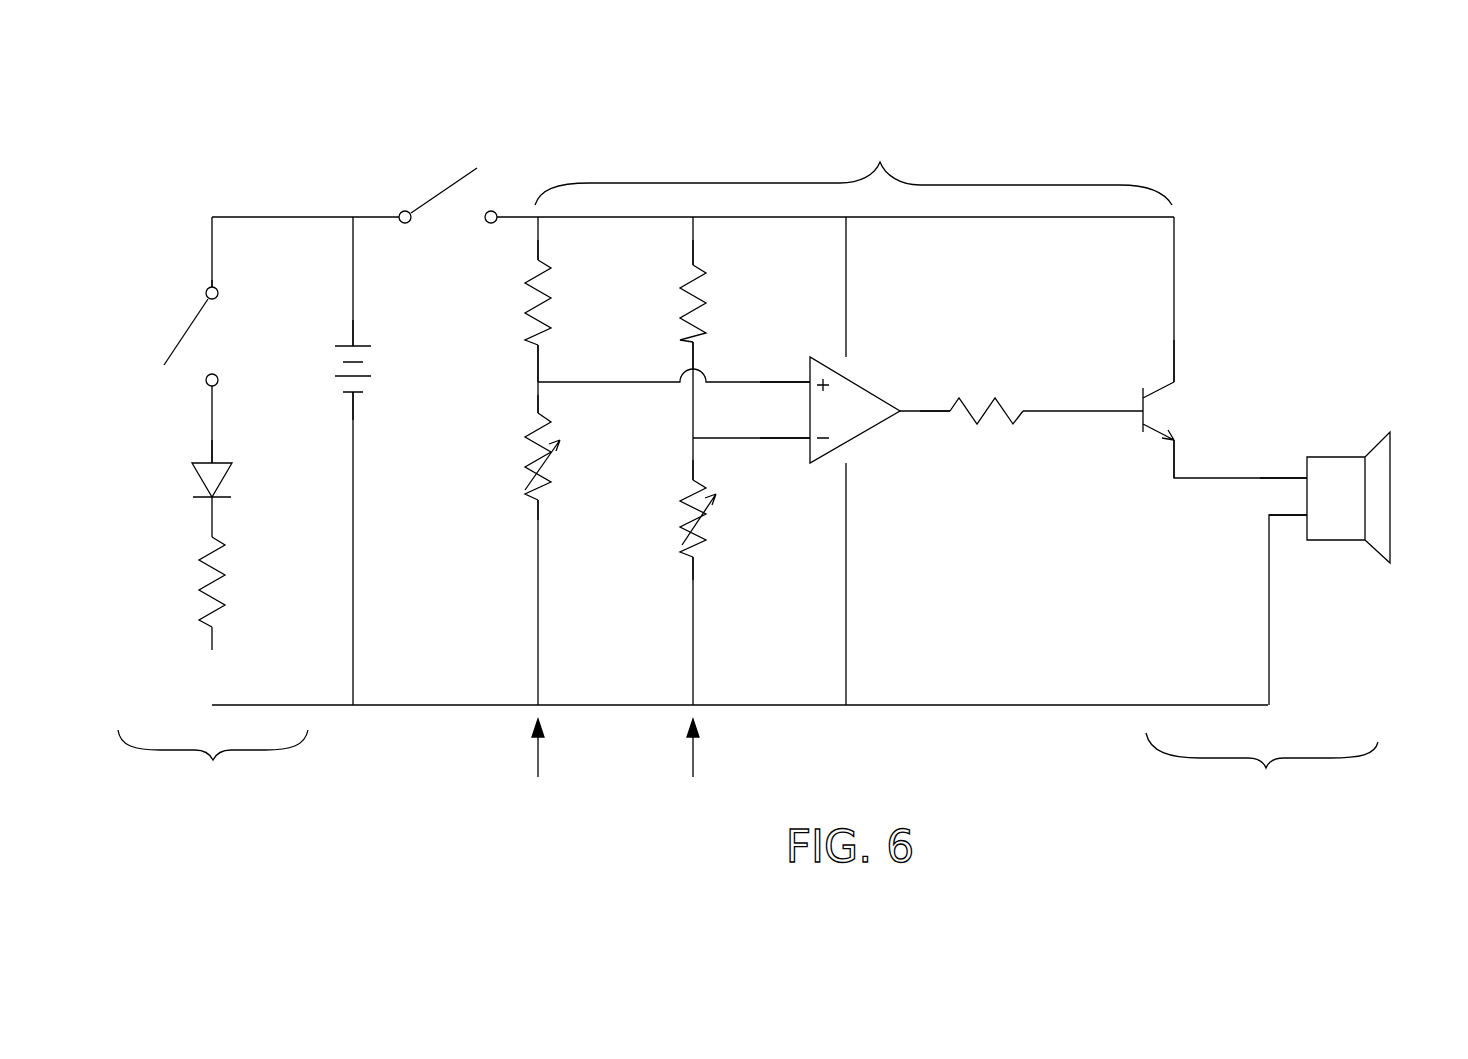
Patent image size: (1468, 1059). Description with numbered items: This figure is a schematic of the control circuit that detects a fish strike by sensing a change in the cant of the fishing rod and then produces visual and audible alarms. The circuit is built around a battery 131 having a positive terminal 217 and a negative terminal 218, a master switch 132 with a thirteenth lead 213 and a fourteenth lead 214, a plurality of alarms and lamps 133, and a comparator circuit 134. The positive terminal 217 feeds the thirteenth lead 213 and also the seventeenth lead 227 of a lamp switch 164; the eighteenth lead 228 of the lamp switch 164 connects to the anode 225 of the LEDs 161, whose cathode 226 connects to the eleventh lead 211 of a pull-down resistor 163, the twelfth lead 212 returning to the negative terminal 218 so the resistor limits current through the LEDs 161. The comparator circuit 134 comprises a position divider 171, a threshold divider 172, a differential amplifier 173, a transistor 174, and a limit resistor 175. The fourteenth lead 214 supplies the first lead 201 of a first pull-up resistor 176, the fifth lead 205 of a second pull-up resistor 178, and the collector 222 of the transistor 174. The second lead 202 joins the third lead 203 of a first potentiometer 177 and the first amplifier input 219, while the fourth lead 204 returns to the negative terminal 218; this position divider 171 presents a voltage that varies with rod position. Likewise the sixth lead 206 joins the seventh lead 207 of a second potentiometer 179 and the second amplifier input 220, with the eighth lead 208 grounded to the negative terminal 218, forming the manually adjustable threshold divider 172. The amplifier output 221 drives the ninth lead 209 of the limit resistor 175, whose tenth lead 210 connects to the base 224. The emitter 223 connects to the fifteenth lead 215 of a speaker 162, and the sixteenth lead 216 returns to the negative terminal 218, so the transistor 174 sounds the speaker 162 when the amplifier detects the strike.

The battery 131 is at (332, 368).
The master switch 132 is at (452, 181).
The plurality of alarms and lamps 133 is at (748, 765).
The comparator circuit 134 is at (853, 163).
The LEDs 161 is at (236, 482).
The speaker 162 is at (1392, 497).
The pull-down resistor 163 is at (225, 583).
The lamp switch 164 is at (182, 338).
The position divider 171 is at (537, 769).
The threshold divider 172 is at (692, 769).
The differential amplifier 173 is at (871, 393).
The transistor 174 is at (1175, 408).
The limit resistor 175 is at (985, 430).
The first pull-up resistor 176 is at (556, 307).
The first potentiometer 177 is at (523, 478).
The second pull-up resistor 178 is at (675, 300).
The second potentiometer 179 is at (708, 524).
The first lead 201 is at (538, 252).
The second lead 202 is at (538, 357).
The third lead 203 is at (548, 418).
The fourth lead 204 is at (540, 505).
The fifth lead 205 is at (693, 249).
The sixth lead 206 is at (693, 357).
The seventh lead 207 is at (693, 463).
The eighth lead 208 is at (690, 570).
The ninth lead 209 is at (938, 411).
The tenth lead 210 is at (1037, 411).
The eleventh lead 211 is at (212, 525).
The twelfth lead 212 is at (212, 630).
The thirteenth lead 213 is at (382, 215).
The fourteenth lead 214 is at (514, 215).
The fifteenth lead 215 is at (1290, 478).
The sixteenth lead 216 is at (1290, 515).
The positive terminal 217 is at (353, 333).
The negative terminal 218 is at (353, 398).
The first amplifier input 219 is at (790, 383).
The second amplifier input 220 is at (790, 440).
The amplifier output 221 is at (903, 414).
The collector 222 is at (1176, 363).
The emitter 223 is at (1175, 455).
The base 224 is at (1122, 411).
The anode 225 is at (210, 457).
The cathode 226 is at (212, 497).
The seventeenth lead 227 is at (212, 272).
The eighteenth lead 228 is at (210, 386).